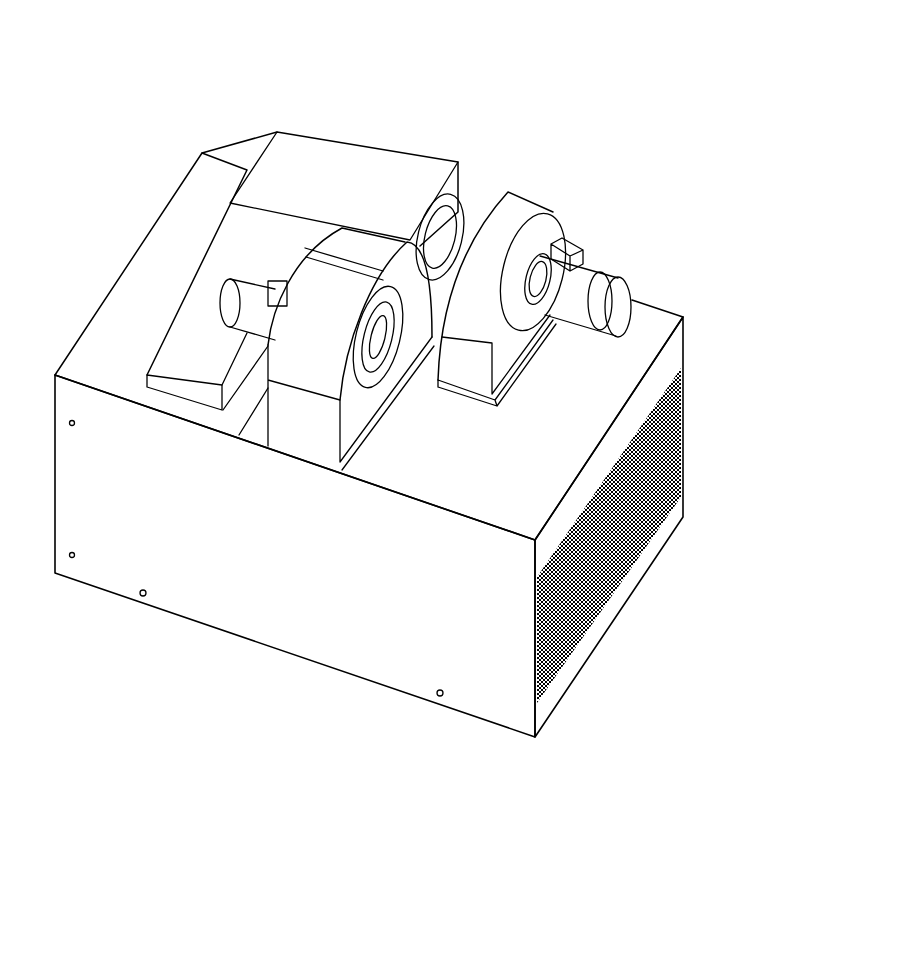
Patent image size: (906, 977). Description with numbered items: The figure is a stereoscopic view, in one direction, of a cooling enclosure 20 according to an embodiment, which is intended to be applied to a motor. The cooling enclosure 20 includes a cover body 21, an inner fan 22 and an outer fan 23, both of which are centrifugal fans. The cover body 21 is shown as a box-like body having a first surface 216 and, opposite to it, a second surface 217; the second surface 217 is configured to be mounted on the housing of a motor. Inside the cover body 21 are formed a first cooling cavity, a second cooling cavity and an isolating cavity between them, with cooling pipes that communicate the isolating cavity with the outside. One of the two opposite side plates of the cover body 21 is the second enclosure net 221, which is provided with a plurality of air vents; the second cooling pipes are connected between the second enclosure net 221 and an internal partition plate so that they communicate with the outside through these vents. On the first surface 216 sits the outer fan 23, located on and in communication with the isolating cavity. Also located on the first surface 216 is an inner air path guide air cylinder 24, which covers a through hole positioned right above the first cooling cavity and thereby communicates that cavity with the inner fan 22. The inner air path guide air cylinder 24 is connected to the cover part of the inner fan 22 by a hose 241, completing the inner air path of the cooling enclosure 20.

The cooling enclosure 20 is at (398, 78).
The cover body 21 is at (672, 347).
The first surface 216 is at (647, 323).
The second surface 217 is at (607, 627).
The second enclosure net 221 is at (638, 563).
The inner fan 22 is at (522, 207).
The outer fan 23 is at (297, 430).
The inner air path guide air cylinder 24 is at (340, 160).
The hose 241 is at (456, 213).